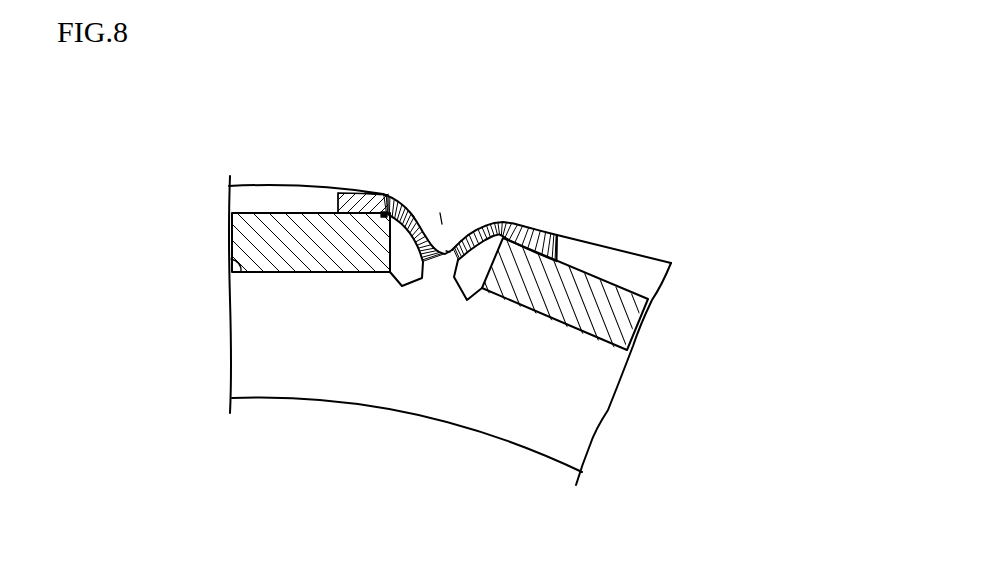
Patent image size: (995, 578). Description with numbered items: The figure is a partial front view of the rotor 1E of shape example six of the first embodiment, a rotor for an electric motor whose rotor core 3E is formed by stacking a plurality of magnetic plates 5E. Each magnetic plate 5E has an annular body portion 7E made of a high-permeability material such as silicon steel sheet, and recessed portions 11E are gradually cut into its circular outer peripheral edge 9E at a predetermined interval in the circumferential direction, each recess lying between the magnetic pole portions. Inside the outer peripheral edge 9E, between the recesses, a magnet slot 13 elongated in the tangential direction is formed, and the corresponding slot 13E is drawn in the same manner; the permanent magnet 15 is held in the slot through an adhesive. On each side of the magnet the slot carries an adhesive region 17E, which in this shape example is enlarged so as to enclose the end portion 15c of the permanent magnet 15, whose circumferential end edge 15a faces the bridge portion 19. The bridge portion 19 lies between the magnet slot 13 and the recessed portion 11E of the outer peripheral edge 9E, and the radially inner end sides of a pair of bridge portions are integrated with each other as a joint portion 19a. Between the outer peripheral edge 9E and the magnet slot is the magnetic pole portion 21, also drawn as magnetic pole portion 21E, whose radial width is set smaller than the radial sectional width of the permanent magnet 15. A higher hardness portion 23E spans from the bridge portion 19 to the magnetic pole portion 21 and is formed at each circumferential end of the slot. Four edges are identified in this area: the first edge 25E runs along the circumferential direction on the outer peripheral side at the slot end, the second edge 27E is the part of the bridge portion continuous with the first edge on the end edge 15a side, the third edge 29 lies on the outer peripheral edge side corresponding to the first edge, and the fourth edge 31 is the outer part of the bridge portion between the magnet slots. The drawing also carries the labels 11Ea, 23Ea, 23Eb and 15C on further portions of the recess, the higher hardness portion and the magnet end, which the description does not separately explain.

The rotor 1E is at (477, 164).
The rotor core 3E is at (499, 199).
The magnetic plate 5E is at (607, 372).
The body portion 7E is at (572, 433).
The outer peripheral edge 9E is at (292, 203).
The recessed portion 11E is at (447, 250).
The end of joint portion 11Ea is at (338, 195).
The magnet slot 13 is at (633, 340).
The magnet slot 13E is at (231, 262).
The permanent magnet 15 is at (250, 242).
The circumferential end edge 15a is at (400, 286).
The end portion 15c is at (388, 273).
The end portion of core member 15C is at (598, 428).
The adhesive region 17E is at (420, 279).
The bridge portion 19 is at (440, 212).
The joint portion 19a is at (432, 264).
The magnetic pole portion 21 is at (635, 268).
The magnetic pole portion 21E is at (259, 193).
The higher hardness portion 23E is at (397, 194).
The flat portion of bonding layer 23Ea is at (336, 203).
The end of bonding layer 23Eb is at (410, 283).
The first edge 25E is at (395, 232).
The second edge 27E is at (385, 237).
The third edge 29 is at (376, 193).
The fourth edge 31 is at (415, 208).